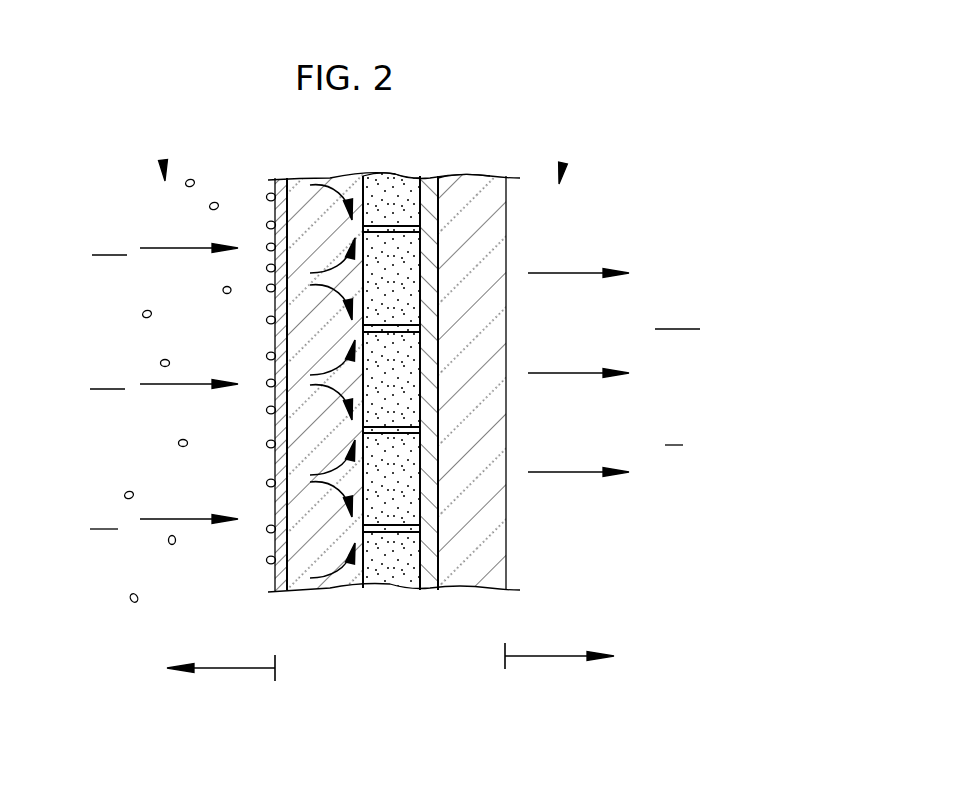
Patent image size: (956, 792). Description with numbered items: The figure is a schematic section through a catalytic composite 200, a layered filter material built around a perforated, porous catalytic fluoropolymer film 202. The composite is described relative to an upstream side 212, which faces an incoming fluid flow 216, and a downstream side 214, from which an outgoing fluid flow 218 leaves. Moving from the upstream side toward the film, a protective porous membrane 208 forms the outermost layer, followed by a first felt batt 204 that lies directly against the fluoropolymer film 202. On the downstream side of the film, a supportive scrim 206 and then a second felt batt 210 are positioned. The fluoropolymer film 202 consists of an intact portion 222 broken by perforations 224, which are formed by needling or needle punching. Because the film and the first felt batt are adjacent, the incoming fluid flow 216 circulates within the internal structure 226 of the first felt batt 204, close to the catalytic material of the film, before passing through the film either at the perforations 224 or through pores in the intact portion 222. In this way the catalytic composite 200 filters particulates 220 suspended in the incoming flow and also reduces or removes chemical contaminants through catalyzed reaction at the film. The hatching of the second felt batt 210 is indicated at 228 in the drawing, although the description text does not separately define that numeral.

The catalytic composite 200 is at (515, 70).
The porous catalytic fluoropolymer film 202 is at (392, 625).
The first felt batt 204 is at (330, 625).
The supportive scrim 206 is at (418, 625).
The protective porous membrane 208 is at (291, 625).
The second felt batt 210 is at (465, 625).
The upstream side 212 is at (237, 668).
The downstream side 214 is at (557, 656).
The incoming fluid flow 216 is at (163, 170).
The outgoing fluid flow 218 is at (565, 170).
The particulates 220 is at (145, 314).
The intact portion 222 is at (400, 176).
The perforations 224 is at (395, 230).
The internal structure 226 is at (320, 207).
The outlet layer hatching 228 is at (478, 185).